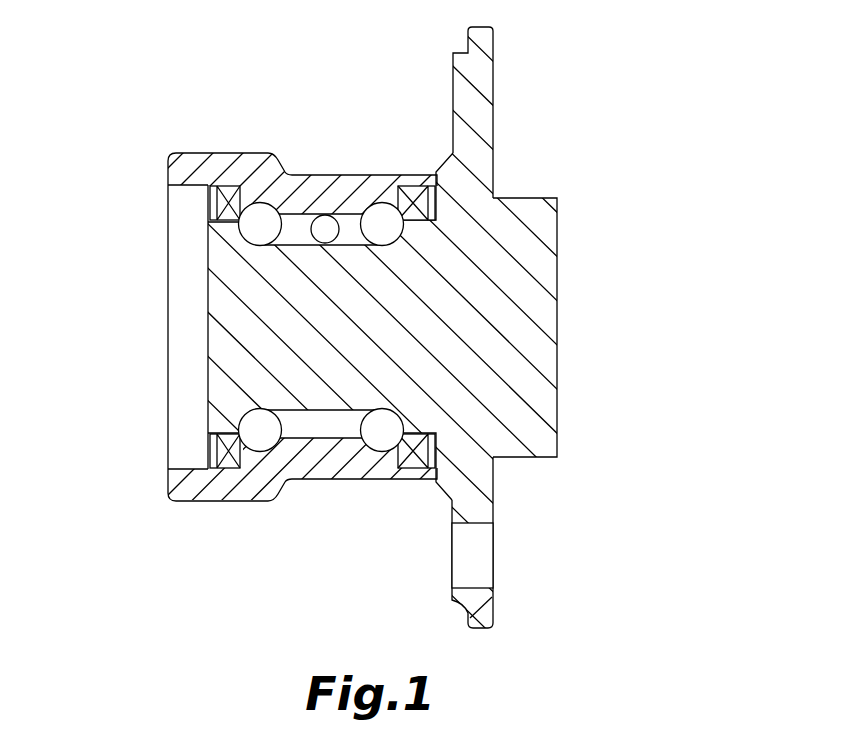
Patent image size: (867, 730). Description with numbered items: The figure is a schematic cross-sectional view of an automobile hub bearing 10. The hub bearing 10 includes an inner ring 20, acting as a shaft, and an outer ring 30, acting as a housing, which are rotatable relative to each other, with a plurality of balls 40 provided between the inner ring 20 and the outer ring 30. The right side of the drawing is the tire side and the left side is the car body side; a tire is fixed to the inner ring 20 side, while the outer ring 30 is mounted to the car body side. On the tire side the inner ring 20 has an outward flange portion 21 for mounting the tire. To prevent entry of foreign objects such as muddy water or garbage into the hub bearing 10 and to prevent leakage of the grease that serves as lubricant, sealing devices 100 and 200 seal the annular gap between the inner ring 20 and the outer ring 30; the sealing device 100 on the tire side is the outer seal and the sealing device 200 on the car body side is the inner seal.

The hub bearing 10 is at (636, 90).
The inner ring 20 is at (587, 249).
The outward flange portion 21 is at (486, 72).
The outer ring 30 is at (187, 128).
The balls 40 is at (260, 438).
The sealing device 100 is at (416, 186).
The sealing device 200 is at (226, 186).